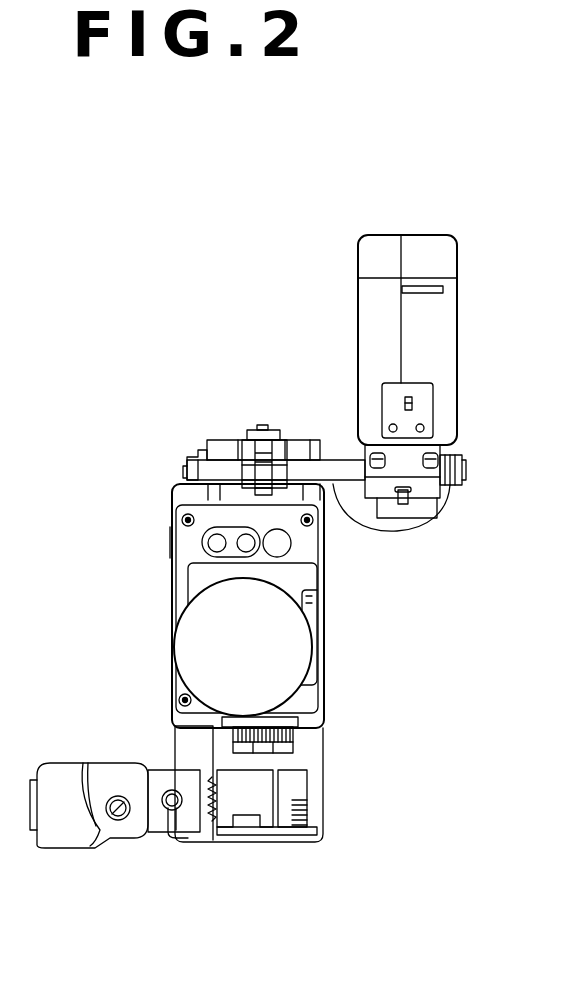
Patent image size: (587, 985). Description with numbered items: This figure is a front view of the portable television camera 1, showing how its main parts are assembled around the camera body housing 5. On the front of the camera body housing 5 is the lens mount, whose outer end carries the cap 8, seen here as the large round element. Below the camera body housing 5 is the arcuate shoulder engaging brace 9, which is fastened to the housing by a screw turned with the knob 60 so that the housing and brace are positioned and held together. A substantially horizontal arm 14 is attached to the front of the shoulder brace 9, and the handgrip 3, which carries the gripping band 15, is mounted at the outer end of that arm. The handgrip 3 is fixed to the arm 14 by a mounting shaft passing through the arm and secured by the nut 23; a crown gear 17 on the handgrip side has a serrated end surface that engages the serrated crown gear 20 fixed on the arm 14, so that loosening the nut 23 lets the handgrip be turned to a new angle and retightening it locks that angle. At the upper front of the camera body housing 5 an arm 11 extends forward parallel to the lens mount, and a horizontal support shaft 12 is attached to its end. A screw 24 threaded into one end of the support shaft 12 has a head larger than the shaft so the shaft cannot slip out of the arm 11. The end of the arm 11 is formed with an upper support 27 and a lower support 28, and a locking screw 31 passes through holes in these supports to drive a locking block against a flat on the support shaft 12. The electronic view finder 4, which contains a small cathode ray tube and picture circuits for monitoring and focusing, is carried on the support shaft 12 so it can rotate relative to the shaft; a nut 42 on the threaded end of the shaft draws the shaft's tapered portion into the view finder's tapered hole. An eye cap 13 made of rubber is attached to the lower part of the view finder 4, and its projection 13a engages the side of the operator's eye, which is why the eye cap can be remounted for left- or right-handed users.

The portable television camera 1 is at (165, 511).
The handgrip 3 is at (85, 770).
The electronic view finder 4 is at (440, 333).
The camera body housing 5 is at (178, 572).
The cap 8 is at (278, 649).
The arcuate shoulder engaging brace 9 is at (183, 742).
The arm 11 is at (277, 446).
The horizontal support shaft 12 is at (192, 467).
The eye cap 13 is at (404, 524).
The projection 13a is at (340, 486).
The horizontal arm 14 is at (247, 807).
The gripping band 15 is at (62, 827).
The crown gear 17 is at (198, 805).
The crown gear 20 is at (217, 798).
The nut 23 is at (293, 825).
The screw 24 is at (185, 472).
The upper support 27 is at (252, 462).
The lower support 28 is at (268, 478).
The locking screw 31 is at (260, 432).
The nut 42 is at (455, 455).
The knob 60 is at (293, 738).